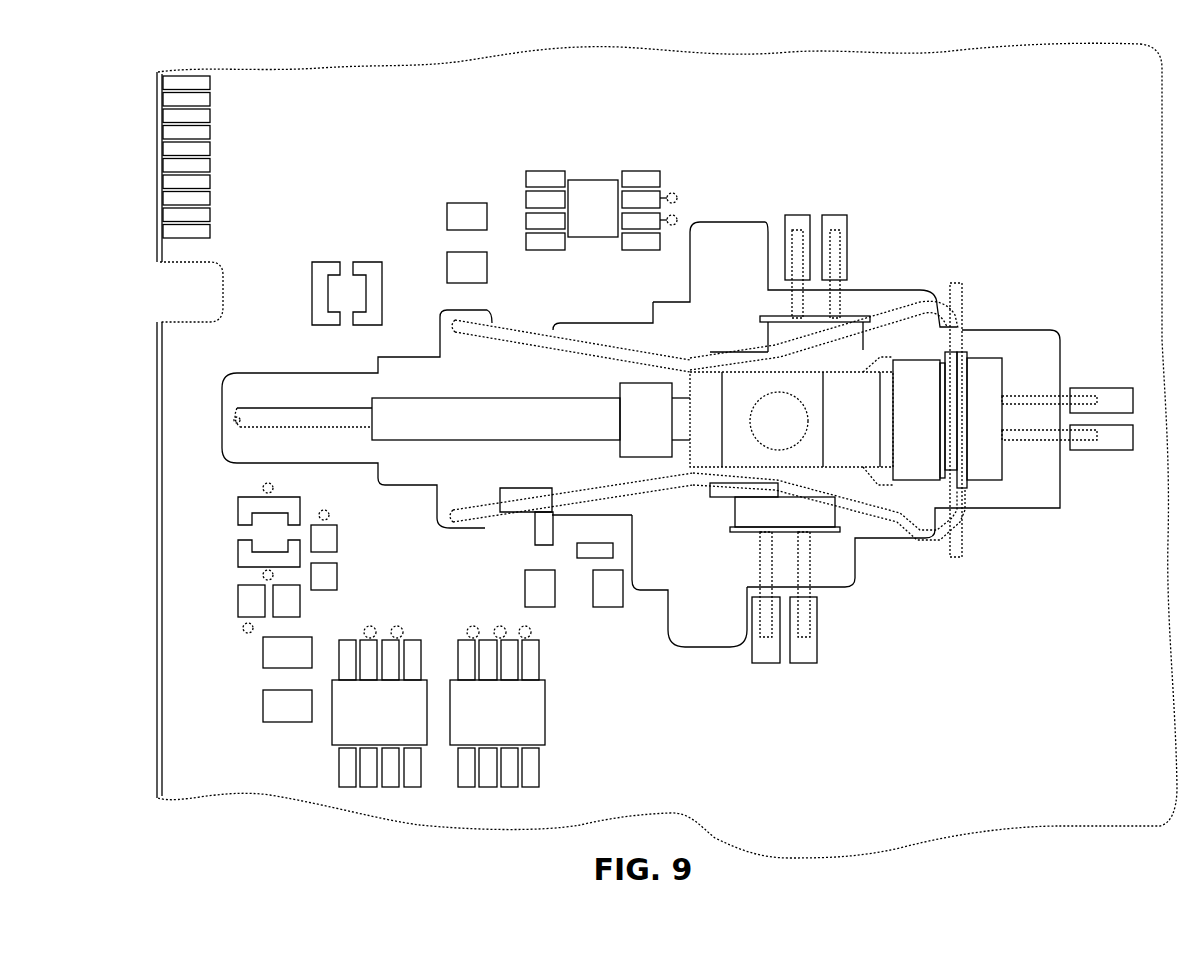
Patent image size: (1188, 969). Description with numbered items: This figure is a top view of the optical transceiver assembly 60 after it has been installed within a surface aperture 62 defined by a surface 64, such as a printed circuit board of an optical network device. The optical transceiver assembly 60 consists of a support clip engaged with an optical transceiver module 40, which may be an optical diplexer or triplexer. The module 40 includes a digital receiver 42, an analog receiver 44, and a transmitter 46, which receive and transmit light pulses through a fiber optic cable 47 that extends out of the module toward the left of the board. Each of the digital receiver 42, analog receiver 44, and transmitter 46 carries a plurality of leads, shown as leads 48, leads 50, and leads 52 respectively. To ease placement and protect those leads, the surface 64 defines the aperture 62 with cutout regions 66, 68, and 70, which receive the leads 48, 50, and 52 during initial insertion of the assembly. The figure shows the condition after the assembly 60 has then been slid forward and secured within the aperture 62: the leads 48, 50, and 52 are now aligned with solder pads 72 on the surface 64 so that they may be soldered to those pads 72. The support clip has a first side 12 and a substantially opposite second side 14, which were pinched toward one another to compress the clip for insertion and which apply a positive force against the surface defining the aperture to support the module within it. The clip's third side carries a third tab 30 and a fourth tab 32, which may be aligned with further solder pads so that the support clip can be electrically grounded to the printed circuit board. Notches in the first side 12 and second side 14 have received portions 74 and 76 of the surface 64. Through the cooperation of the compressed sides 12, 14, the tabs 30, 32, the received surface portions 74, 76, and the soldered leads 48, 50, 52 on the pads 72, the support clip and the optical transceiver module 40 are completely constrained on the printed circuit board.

The first side 12 is at (512, 500).
The second side 14 is at (523, 325).
The third tab 30 is at (945, 535).
The fourth tab 32 is at (948, 303).
The optical transceiver module 40 is at (831, 428).
The digital receiver 42 is at (780, 330).
The analog receiver 44 is at (787, 513).
The transmitter 46 is at (982, 373).
The fiber optic cable 47 is at (270, 417).
The leads 48 is at (837, 303).
The leads 50 is at (1033, 393).
The leads 52 is at (797, 568).
The optical transceiver assembly 60 is at (1026, 154).
The surface aperture 62 is at (258, 397).
The surface 64 is at (309, 153).
The cutout region 66 is at (717, 270).
The cutout region 68 is at (1012, 478).
The cutout region 70 is at (695, 617).
The solder pads 72 is at (832, 218).
The portion of surface 74 is at (510, 500).
The portion of surface 76 is at (497, 340).